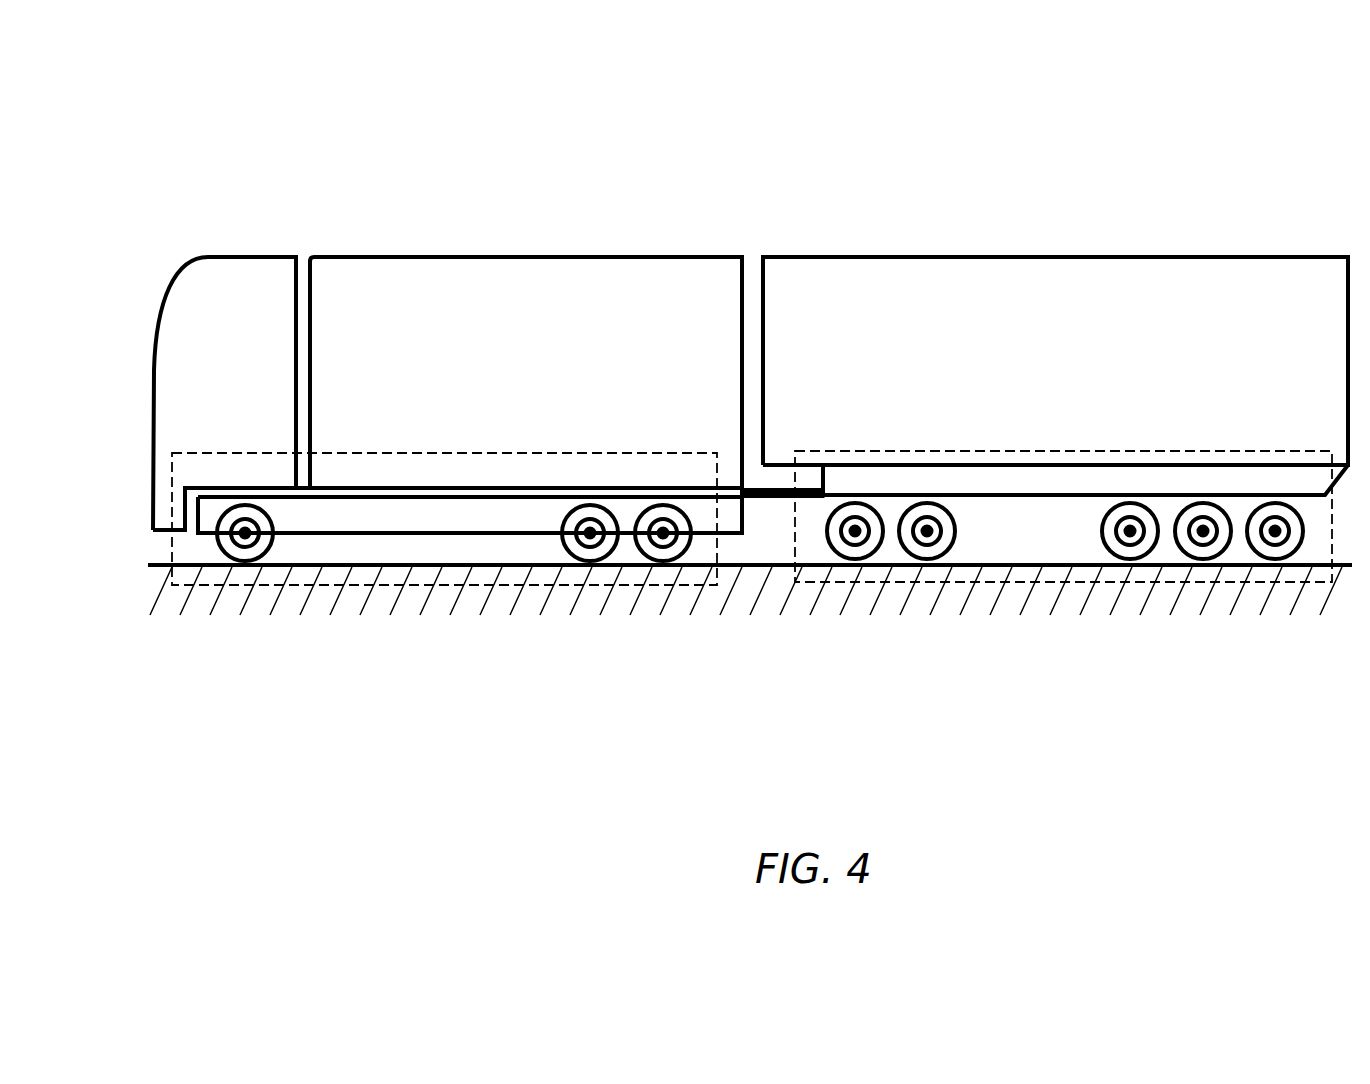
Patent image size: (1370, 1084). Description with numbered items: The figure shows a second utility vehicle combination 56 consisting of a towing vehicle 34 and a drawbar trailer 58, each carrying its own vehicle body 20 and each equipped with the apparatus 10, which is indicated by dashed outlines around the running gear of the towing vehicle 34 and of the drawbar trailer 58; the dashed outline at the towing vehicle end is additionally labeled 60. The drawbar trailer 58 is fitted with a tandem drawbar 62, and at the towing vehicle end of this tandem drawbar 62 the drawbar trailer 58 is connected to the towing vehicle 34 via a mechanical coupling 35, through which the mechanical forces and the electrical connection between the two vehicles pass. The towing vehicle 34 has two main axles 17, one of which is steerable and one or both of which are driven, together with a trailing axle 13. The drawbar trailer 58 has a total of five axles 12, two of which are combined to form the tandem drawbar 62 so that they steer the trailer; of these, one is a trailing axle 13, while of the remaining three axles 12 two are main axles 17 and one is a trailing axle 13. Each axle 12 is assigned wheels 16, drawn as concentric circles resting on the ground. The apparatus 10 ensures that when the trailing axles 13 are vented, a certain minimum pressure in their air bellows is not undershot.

The second utility vehicle combination 56 is at (284, 114).
The towing vehicle unit 60 is at (173, 585).
The apparatus 10 is at (350, 452).
The vehicle body 20 is at (829, 372).
The towing vehicle 34 is at (558, 378).
The drawbar trailer 58 is at (1082, 373).
The mechanical coupling 35 is at (742, 488).
The tandem drawbar 62 is at (888, 476).
The axle 12 is at (760, 566).
The main axle 17 is at (250, 535).
The trailing axle 13 is at (670, 540).
The wheel 16 is at (243, 545).